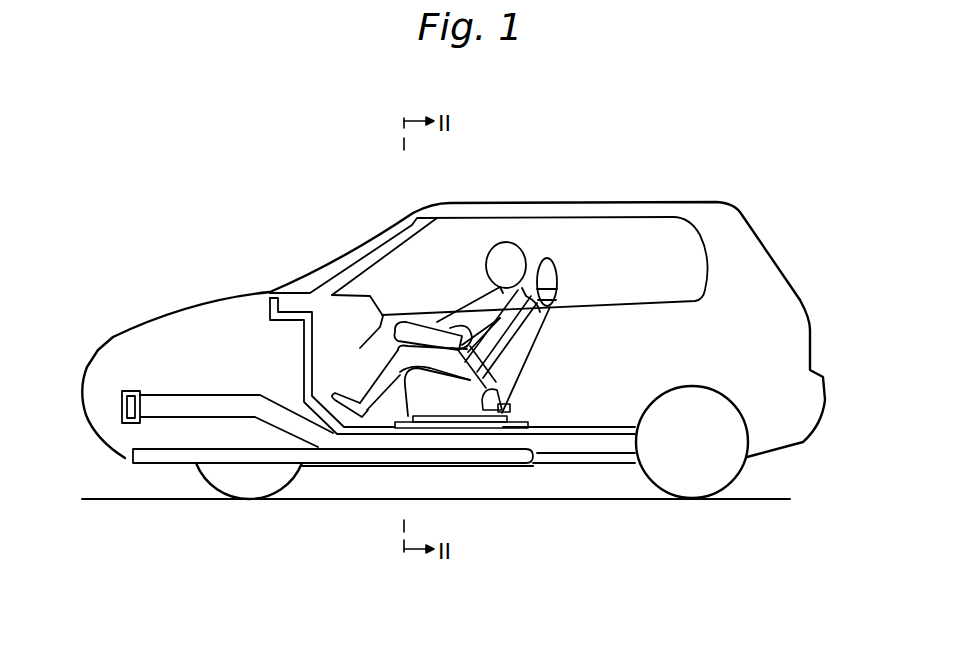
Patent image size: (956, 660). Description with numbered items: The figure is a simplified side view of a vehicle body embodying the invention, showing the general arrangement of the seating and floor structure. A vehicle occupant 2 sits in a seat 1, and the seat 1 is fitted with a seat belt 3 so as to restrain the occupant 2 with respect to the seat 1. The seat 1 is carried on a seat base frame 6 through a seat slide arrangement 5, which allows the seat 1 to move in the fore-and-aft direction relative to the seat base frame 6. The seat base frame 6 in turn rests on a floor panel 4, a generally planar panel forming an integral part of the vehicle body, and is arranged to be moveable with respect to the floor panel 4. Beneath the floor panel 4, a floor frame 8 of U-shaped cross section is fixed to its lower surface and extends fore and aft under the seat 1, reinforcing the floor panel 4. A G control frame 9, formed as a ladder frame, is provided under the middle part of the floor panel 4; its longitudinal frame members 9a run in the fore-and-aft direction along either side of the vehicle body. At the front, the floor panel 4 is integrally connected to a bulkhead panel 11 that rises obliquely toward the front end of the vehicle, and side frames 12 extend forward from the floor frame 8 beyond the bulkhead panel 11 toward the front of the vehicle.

The seat 1 is at (532, 347).
The vehicle occupant 2 is at (510, 244).
The seat belt 3 is at (478, 375).
The floor panel 4 is at (612, 427).
The seat slide arrangement 5 is at (533, 425).
The seat base frame 6 is at (513, 415).
The floor frame 8 is at (580, 450).
The G control frame 9 is at (171, 470).
The longitudinal frame member 9a is at (463, 455).
The bulkhead panel 11 is at (303, 353).
The side frame 12 is at (191, 395).